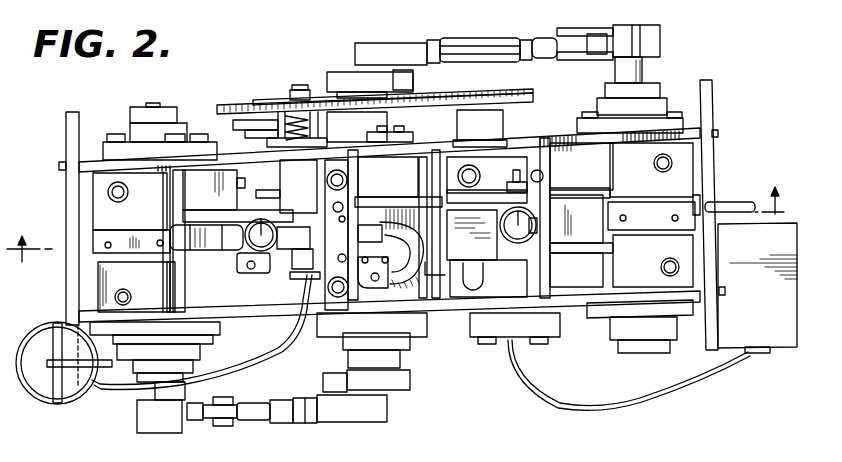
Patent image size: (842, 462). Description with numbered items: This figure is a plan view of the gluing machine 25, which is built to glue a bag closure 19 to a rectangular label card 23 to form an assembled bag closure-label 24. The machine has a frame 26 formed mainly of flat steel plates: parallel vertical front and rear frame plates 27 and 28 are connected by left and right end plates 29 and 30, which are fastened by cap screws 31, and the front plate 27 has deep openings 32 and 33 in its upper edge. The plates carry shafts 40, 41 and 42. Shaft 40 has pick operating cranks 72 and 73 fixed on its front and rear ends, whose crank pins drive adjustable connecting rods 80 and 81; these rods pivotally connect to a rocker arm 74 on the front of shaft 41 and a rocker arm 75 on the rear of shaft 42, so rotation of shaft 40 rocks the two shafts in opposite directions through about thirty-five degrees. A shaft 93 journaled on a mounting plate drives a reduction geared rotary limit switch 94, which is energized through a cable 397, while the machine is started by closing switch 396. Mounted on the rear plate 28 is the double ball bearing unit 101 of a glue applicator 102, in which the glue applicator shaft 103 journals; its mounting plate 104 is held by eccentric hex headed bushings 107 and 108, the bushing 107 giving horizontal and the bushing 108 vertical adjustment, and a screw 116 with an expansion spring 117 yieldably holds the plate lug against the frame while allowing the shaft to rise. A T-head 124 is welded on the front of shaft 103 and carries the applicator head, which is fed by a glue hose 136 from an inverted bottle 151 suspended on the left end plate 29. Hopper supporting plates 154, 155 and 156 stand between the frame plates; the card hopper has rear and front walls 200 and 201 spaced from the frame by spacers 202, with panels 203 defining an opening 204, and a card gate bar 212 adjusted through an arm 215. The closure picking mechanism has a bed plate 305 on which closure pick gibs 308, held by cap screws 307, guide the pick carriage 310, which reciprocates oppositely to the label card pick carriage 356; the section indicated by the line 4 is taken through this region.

The section line 4- 4 is at (395, 211).
The closure 19 is at (213, 250).
The label card 23 is at (587, 207).
The assembled bag closure-label 24 is at (410, 212).
The gluing machine 25 is at (712, 53).
The frame 26 is at (716, 93).
The vertical front frame plate 27 is at (578, 302).
The vertical rear frame plate 28 is at (532, 140).
The left end plate 29 is at (72, 181).
The right end plate 30 is at (714, 152).
The cap screws 31 is at (60, 163).
The deep opening 32 is at (330, 318).
The deep opening 33 is at (535, 325).
The shaft 40 is at (390, 392).
The shaft 41 is at (157, 104).
The shaft 42 is at (645, 70).
The pick operating crank 72 is at (410, 375).
The pick operating crank 73 is at (338, 72).
The rocker arm 74 is at (205, 428).
The rocker arm 75 is at (598, 30).
The adjustable connecting rod 80 is at (298, 420).
The adjustable connecting rod 81 is at (490, 40).
The shaft 93 is at (482, 92).
The reduction geared rotary limit switch 94 is at (490, 336).
The double ball bearing unit 101 is at (282, 178).
The glue applicator 102 is at (275, 197).
The glue applicator shaft 103 is at (294, 90).
The mounting plate 104 is at (218, 145).
The hex headed bushing 107 is at (163, 152).
The hex headed bushing 108 is at (380, 140).
The screw 116 is at (293, 112).
The expansion spring 117 is at (270, 128).
The T-head 124 is at (287, 265).
The glue hose 136 is at (234, 366).
The bottle 151 is at (75, 390).
The hopper supporting plate 154 is at (175, 275).
The hopper supporting plate 155 is at (552, 274).
The hopper supporting plate 156 is at (363, 333).
The rear wall 200 is at (613, 184).
The front wall 201 is at (615, 257).
The spacers 202 is at (600, 165).
The panels 203 is at (625, 197).
The opening 204 is at (590, 215).
The card gate bar 212 is at (550, 220).
The arm 215 is at (548, 176).
The bed plate 305 is at (237, 308).
The cap screws 307 is at (125, 194).
The closure pick gibs 308 is at (97, 203).
The pick carriage 310 is at (95, 250).
The label card pick carriage 356 is at (705, 200).
The switch 396 is at (778, 340).
The cable 397 is at (637, 395).